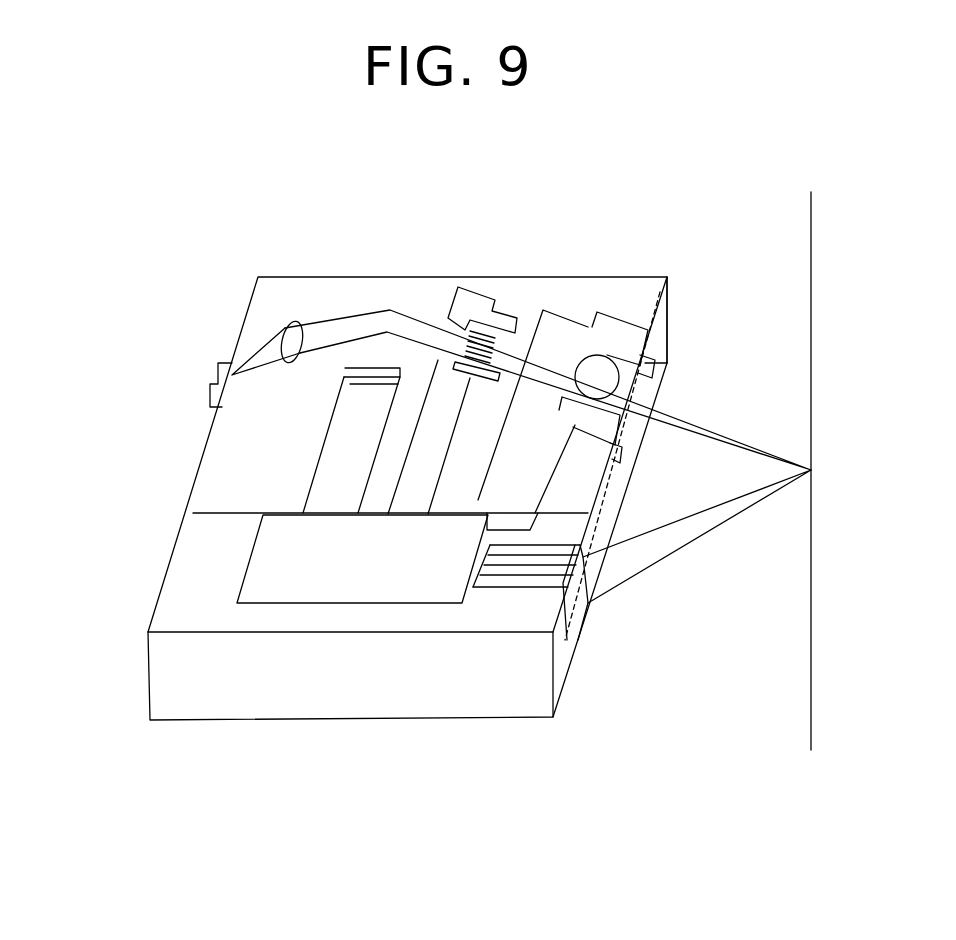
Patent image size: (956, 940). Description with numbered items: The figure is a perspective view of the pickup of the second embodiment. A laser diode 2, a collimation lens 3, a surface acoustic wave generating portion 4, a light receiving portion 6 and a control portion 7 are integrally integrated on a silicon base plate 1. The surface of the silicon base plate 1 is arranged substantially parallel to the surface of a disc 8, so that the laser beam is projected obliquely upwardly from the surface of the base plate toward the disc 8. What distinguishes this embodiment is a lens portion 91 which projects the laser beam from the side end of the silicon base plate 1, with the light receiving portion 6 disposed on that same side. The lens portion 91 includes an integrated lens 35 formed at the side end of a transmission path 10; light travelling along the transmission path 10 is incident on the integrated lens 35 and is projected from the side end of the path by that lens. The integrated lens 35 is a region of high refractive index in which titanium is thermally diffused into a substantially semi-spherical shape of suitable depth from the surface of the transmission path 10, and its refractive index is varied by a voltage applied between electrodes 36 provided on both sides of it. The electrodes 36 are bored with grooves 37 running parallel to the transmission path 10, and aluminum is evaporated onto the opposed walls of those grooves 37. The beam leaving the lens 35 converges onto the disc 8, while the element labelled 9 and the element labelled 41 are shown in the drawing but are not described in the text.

The silicon base plate 1 is at (488, 712).
The laser diode 2 is at (215, 378).
The collimation lens 3 is at (296, 372).
The surface acoustic wave generating portion 4 is at (366, 390).
The light receiving portion 6 is at (583, 617).
The control portion 7 is at (240, 583).
The disc 8 is at (811, 380).
The plate 9 is at (664, 328).
The transmission path 10 is at (667, 300).
The integrated lens 35 is at (580, 372).
The electrodes 36 is at (600, 335).
The grooves 37 is at (648, 368).
The beam splitter 41 is at (517, 312).
The lens portion 91 is at (600, 292).